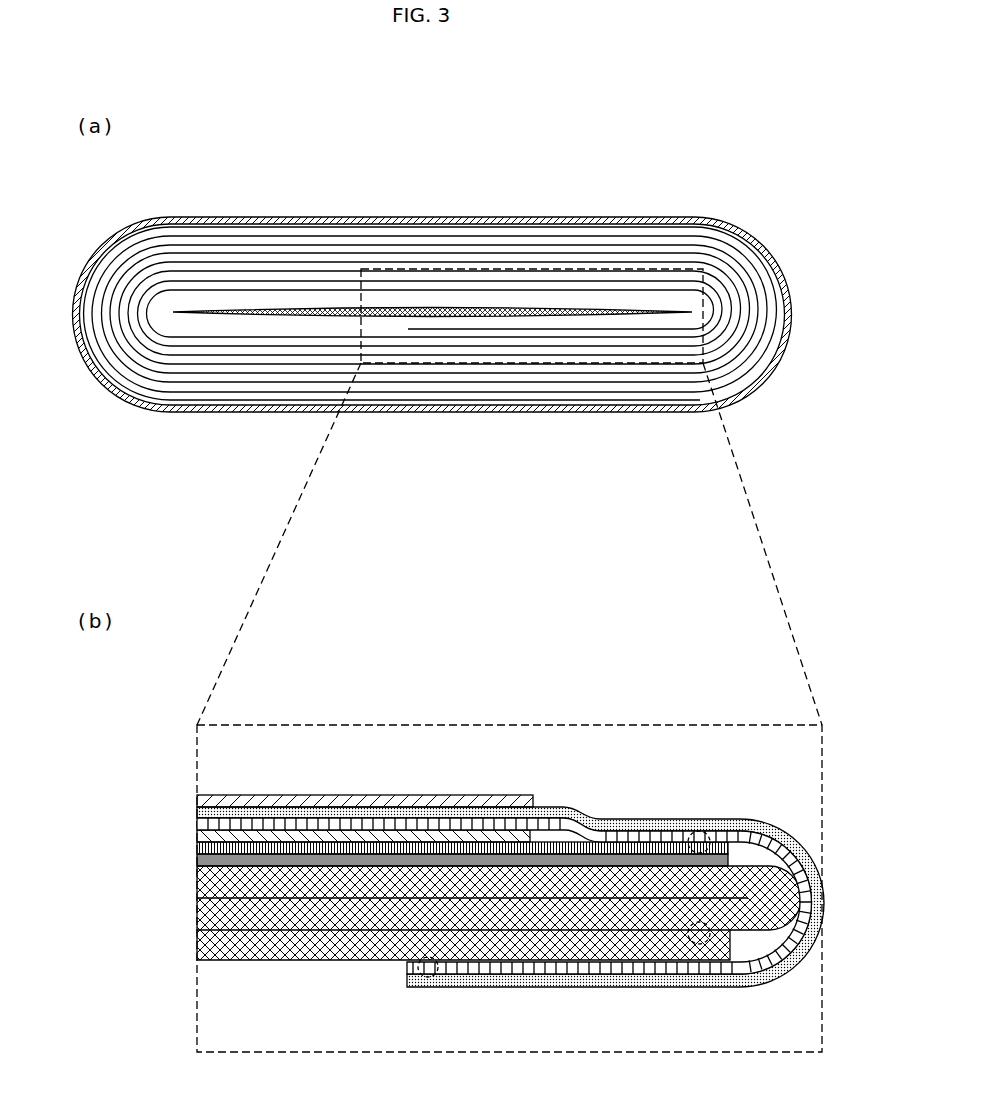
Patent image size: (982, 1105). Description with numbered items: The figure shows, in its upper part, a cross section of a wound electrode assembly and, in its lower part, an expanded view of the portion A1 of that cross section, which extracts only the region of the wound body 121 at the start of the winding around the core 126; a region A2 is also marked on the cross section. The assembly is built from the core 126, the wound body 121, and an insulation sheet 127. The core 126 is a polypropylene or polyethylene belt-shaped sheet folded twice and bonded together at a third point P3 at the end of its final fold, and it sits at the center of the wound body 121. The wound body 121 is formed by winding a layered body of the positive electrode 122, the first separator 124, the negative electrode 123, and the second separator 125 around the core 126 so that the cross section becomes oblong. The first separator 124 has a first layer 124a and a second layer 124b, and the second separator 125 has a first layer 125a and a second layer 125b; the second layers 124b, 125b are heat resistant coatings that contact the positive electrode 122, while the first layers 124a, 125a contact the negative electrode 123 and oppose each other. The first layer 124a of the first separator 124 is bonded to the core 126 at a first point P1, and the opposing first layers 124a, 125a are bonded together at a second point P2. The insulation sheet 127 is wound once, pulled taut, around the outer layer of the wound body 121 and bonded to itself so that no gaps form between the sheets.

The wound body 121 is at (662, 259).
The positive electrode 122 is at (197, 800).
The negative electrode 123 is at (197, 836).
The first separator 124 is at (510, 908).
The first layer of first separator 124a is at (407, 967).
The second layer of first separator 124b is at (407, 979).
The second separator 125 is at (391, 866).
The first layer of second separator 125a is at (197, 848).
The second layer of second separator 125b is at (197, 862).
The core 126 is at (618, 315).
The insulation sheet 127 is at (573, 217).
The portion A1 is at (495, 725).
The portion A2 is at (430, 268).
The first point P1 is at (430, 977).
The second point P2 is at (699, 831).
The third point P3 is at (700, 944).